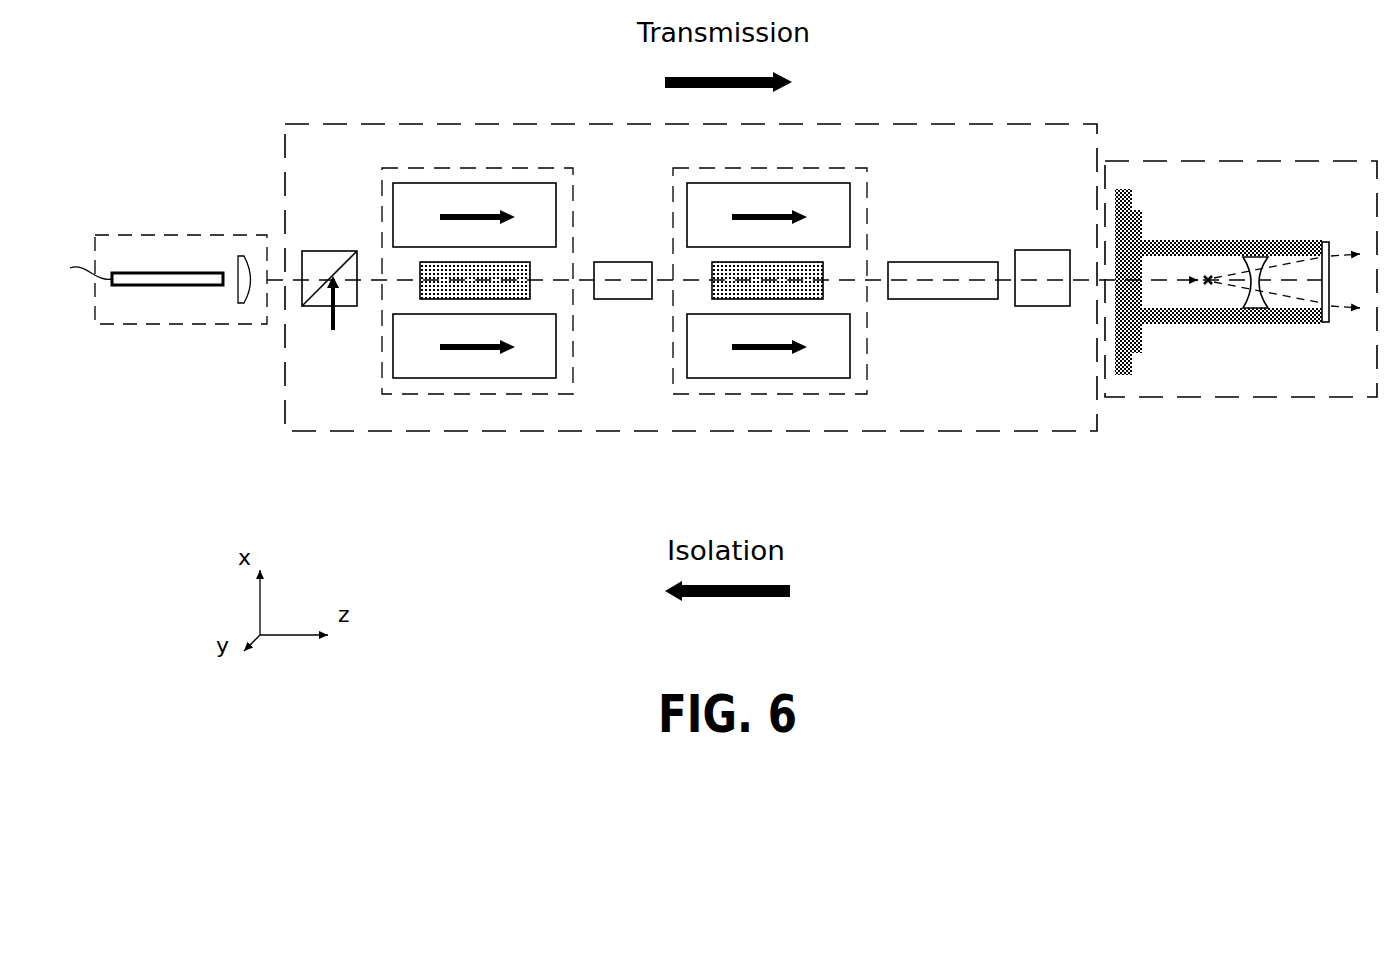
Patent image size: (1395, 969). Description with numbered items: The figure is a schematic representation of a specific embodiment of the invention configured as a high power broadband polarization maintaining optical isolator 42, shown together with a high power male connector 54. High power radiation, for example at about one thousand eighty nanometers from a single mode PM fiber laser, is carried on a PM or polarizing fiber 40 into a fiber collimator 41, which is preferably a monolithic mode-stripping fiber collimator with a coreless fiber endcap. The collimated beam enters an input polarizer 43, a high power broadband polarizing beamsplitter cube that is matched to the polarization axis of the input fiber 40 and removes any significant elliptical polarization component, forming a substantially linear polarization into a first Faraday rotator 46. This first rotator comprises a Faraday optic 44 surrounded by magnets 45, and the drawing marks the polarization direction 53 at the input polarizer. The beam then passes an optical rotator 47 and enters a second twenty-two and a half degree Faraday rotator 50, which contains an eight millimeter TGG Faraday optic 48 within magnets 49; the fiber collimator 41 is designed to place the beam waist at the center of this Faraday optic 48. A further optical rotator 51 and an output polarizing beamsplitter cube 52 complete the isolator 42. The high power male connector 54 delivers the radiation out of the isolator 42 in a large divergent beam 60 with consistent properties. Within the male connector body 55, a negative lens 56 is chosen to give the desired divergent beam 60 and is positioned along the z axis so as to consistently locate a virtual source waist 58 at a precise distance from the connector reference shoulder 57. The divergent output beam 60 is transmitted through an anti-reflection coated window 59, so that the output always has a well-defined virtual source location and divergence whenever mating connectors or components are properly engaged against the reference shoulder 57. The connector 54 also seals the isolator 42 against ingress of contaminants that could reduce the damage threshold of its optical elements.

The PM or polarizing fiber 40 is at (68, 285).
The fiber collimator 41 is at (183, 230).
The PM-type optical isolator 42 is at (452, 121).
The input polarizer 43 is at (328, 246).
The Faraday optic 44 is at (428, 257).
The magnets 45 is at (544, 313).
The first Faraday rotator 46 is at (478, 165).
The optical rotator 47 is at (626, 257).
The TGG Faraday optic 48 is at (708, 280).
The magnets 49 is at (851, 338).
The second Faraday rotator 50 is at (770, 165).
The optical rotator 51 is at (915, 246).
The polarizing beamsplitter cube 52 is at (1036, 242).
The polarization direction 53 is at (322, 330).
The high power male connector 54 is at (1287, 159).
The male connector body 55 is at (1216, 236).
The negative lens 56 is at (1252, 255).
The connector reference shoulder 57 is at (1144, 335).
The virtual source waist 58 is at (1208, 299).
The anti-reflection coated window 59 is at (1326, 330).
The divergent beam 60 is at (1341, 290).